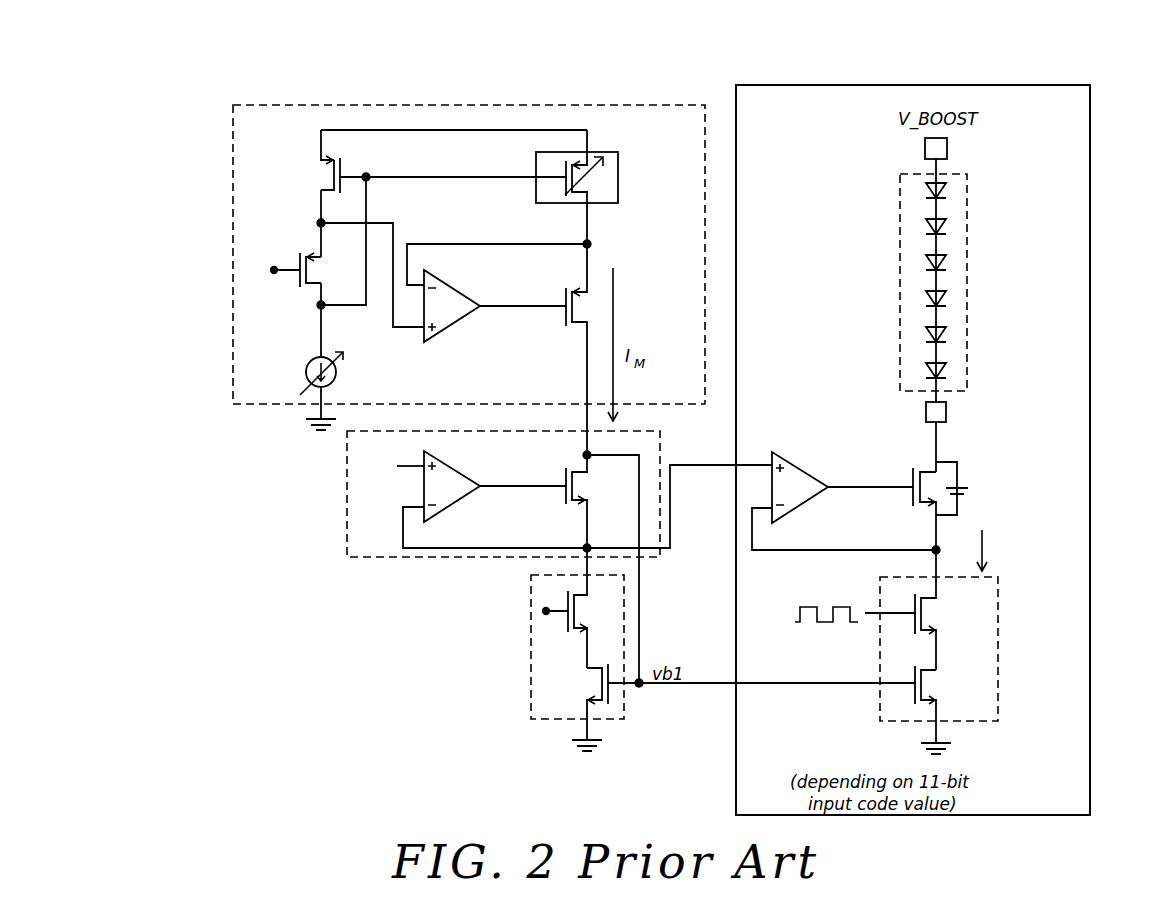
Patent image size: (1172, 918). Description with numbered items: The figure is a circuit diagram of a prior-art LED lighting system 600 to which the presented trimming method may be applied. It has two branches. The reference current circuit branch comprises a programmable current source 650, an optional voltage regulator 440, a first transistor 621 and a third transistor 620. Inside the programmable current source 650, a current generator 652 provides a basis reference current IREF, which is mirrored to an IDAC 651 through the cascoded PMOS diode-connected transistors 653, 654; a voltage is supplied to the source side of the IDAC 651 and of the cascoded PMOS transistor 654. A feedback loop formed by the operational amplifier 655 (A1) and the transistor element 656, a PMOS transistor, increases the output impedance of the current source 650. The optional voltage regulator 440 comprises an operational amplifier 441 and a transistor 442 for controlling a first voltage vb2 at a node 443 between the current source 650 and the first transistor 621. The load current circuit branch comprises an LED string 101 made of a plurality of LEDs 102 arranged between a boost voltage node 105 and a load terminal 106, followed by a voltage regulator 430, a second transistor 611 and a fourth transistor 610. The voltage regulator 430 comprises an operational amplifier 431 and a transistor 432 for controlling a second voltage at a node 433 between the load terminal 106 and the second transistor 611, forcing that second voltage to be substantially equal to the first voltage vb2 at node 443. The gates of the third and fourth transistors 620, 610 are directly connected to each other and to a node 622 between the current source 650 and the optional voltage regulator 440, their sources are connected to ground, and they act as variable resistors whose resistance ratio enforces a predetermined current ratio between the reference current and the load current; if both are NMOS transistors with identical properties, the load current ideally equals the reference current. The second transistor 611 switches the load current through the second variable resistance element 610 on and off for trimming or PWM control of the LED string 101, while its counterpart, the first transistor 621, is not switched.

The lighting system 600 is at (353, 51).
The programmable current source 650 is at (678, 105).
The IDAC 651 is at (603, 153).
The cascoded PMOS transistor 654 is at (320, 177).
The cascoded PMOS transistor 653 is at (298, 264).
The current generator 652 is at (305, 360).
The operational amplifier 655 is at (444, 280).
The transistor element 656 is at (578, 307).
The node 622 is at (600, 455).
The voltage regulator 440 is at (347, 497).
The operational amplifier 441 is at (447, 467).
The transistor 442 is at (562, 480).
The node 443 is at (592, 548).
The first transistor 621 is at (560, 604).
The third transistor 620 is at (590, 688).
The voltage regulator 430 is at (905, 511).
The operational amplifier 431 is at (800, 467).
The transistor 432 is at (962, 471).
The node 433 is at (930, 548).
The boost voltage node 105 is at (924, 148).
The LED string 101 is at (940, 288).
The LEDs 102 is at (920, 195).
The load terminal 106 is at (925, 412).
The second transistor 611 is at (940, 628).
The fourth transistor 610 is at (938, 684).